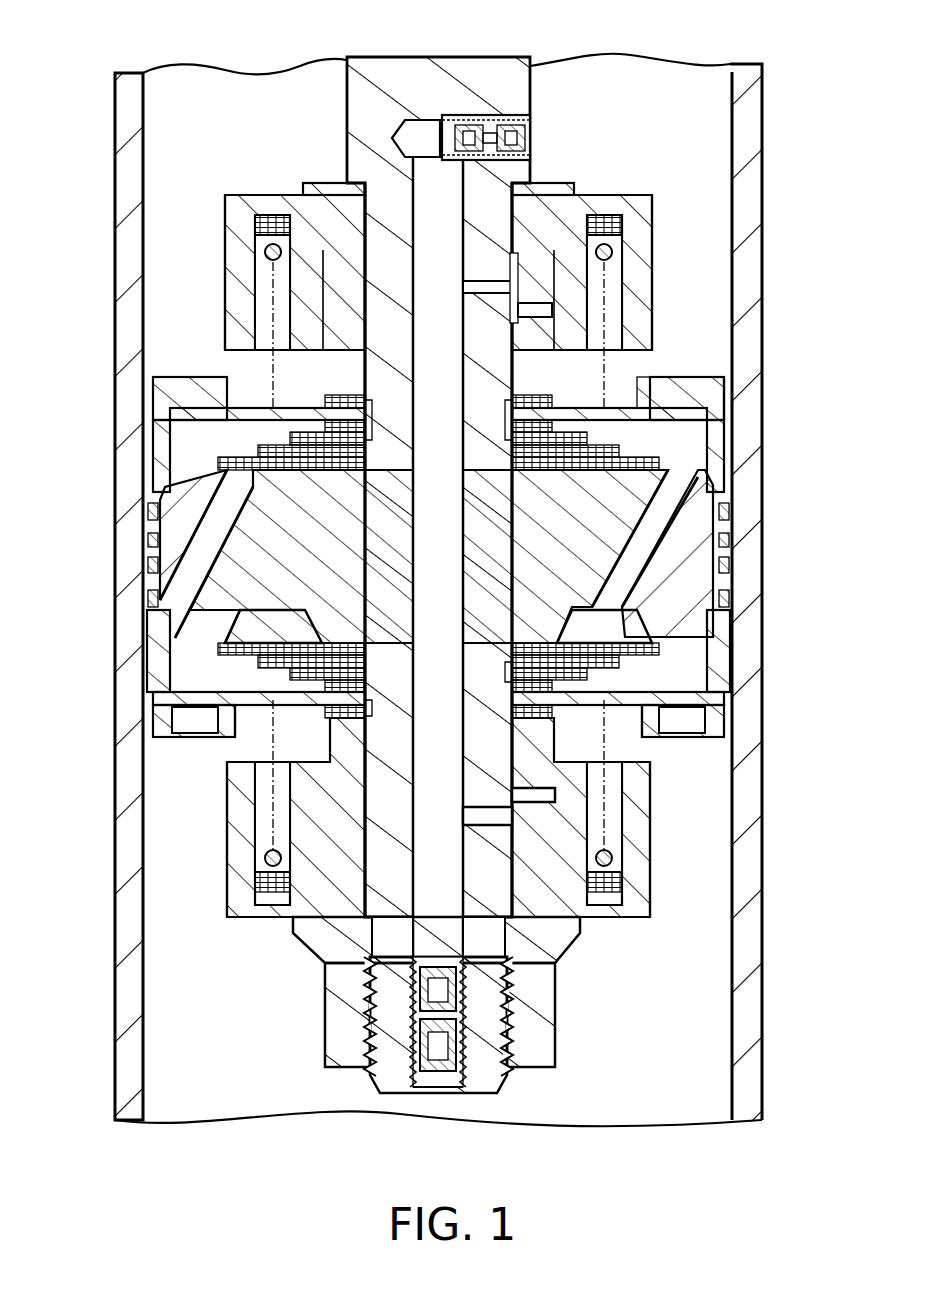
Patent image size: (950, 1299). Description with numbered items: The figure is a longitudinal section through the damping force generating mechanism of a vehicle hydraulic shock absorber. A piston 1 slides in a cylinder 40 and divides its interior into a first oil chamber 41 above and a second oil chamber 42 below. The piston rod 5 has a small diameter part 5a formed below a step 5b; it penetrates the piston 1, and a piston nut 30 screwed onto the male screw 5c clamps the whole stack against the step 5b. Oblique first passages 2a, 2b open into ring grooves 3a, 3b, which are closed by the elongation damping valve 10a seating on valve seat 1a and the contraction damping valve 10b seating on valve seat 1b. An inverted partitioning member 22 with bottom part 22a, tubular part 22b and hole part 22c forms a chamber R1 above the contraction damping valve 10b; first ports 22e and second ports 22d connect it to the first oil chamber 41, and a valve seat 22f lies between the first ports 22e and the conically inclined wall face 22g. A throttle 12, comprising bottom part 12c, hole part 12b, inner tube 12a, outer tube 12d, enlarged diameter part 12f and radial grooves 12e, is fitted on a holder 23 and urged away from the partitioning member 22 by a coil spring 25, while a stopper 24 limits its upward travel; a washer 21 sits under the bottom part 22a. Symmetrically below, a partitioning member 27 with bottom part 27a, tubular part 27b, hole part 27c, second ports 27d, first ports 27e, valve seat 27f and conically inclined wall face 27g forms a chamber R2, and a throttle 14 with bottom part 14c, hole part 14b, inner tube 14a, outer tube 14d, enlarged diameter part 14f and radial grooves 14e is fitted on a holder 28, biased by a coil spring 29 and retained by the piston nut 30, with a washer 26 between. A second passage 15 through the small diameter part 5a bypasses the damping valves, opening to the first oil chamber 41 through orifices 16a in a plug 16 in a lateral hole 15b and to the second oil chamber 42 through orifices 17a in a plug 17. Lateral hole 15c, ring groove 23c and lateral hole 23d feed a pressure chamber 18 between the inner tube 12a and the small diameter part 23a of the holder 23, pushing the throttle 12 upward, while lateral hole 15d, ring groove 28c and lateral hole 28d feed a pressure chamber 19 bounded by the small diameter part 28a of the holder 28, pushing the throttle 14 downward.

The piston 1 is at (702, 580).
The valve seat 1a is at (640, 645).
The valve seat 1b is at (235, 482).
The first passage 2a is at (665, 520).
The first passage 2b is at (223, 572).
The ring groove 3a is at (640, 625).
The ring groove 3b is at (215, 538).
The piston rod 5 is at (345, 61).
The small diameter part 5a is at (372, 598).
The step 5b is at (342, 182).
The male screw 5c is at (372, 1001).
The elongation damping valve 10a is at (667, 654).
The contraction damping valve 10b is at (220, 463).
The throttle 12 is at (650, 193).
The inner tube 12a is at (580, 216).
The hole part 12b is at (308, 212).
The bottom part 12c is at (603, 212).
The outer tube 12d is at (652, 288).
The radial grooves 12e is at (235, 197).
The enlarged diameter part 12f is at (548, 290).
The throttle 14 is at (670, 858).
The inner tube 14a is at (580, 827).
The hole part 14b is at (570, 947).
The bottom part 14c is at (620, 905).
The outer tube 14d is at (656, 828).
The radial grooves 14e is at (243, 915).
The enlarged diameter part 14f is at (415, 925).
The second passage 15 is at (413, 958).
The lateral hole 15b is at (530, 117).
The lateral hole 15c is at (470, 285).
The lateral hole 15d is at (470, 818).
The plug 16 is at (508, 124).
The orifice 16a is at (462, 124).
The plug 17 is at (410, 1038).
The orifice 17a is at (467, 1018).
The pressure chamber 18 is at (318, 270).
The pressure chamber 19 is at (310, 843).
The washer 21 is at (370, 437).
The partitioning member 22 is at (722, 380).
The bottom part 22a is at (705, 478).
The tubular part 22b is at (712, 456).
The hole part 22c is at (372, 438).
The second ports 22d is at (170, 380).
The first ports 22e is at (200, 413).
The valve seat 22f is at (642, 406).
The conically inclined wall face 22g is at (160, 392).
The holder 23 is at (593, 367).
The small diameter part 23a is at (605, 240).
The ring groove 23c is at (505, 268).
The lateral hole 23d is at (604, 345).
The stopper 24 is at (540, 183).
The coil spring 25 is at (275, 297).
The washer 26 is at (368, 672).
The partitioning member 27 is at (150, 662).
The bottom part 27a is at (200, 708).
The tubular part 27b is at (158, 632).
The hole part 27c is at (372, 700).
The second ports 27d is at (700, 692).
The first ports 27e is at (250, 705).
The valve seat 27f is at (690, 718).
The conically inclined wall face 27g is at (163, 740).
The holder 28 is at (255, 790).
The small diameter part 28a is at (323, 897).
The ring groove 28c is at (330, 808).
The lateral hole 28d is at (555, 795).
The coil spring 29 is at (628, 718).
The piston nut 30 is at (332, 1067).
The cylinder 40 is at (125, 110).
The first oil chamber 41 is at (218, 120).
The second oil chamber 42 is at (676, 1089).
The chamber R1 is at (696, 462).
The chamber R2 is at (204, 670).